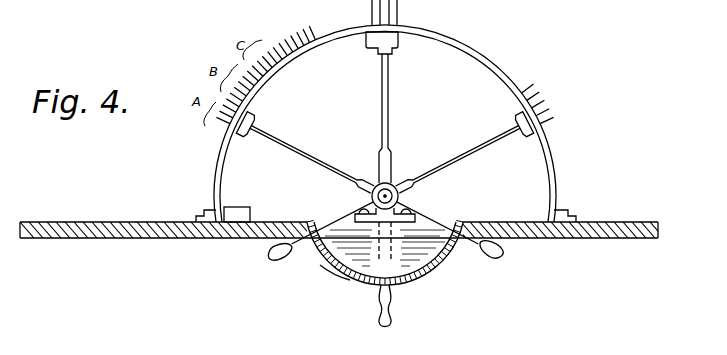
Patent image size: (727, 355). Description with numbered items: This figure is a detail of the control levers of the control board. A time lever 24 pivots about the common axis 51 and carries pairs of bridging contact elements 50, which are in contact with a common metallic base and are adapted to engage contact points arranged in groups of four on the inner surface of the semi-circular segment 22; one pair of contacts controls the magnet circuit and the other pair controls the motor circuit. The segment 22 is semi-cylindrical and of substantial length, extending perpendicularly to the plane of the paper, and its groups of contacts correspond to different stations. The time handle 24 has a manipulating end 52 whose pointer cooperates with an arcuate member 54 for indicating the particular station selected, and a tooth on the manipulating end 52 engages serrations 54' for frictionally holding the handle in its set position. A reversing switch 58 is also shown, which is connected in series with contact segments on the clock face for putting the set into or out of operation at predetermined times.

The semi-circular segment 22 is at (440, 38).
The time lever 24 is at (390, 104).
The bridging contact elements 50 is at (237, 140).
The common axis 51 is at (393, 186).
The manipulating end 52 is at (493, 261).
The arcuate member 54 is at (386, 264).
The serrations 54' is at (329, 287).
The reversing switch 58 is at (252, 209).